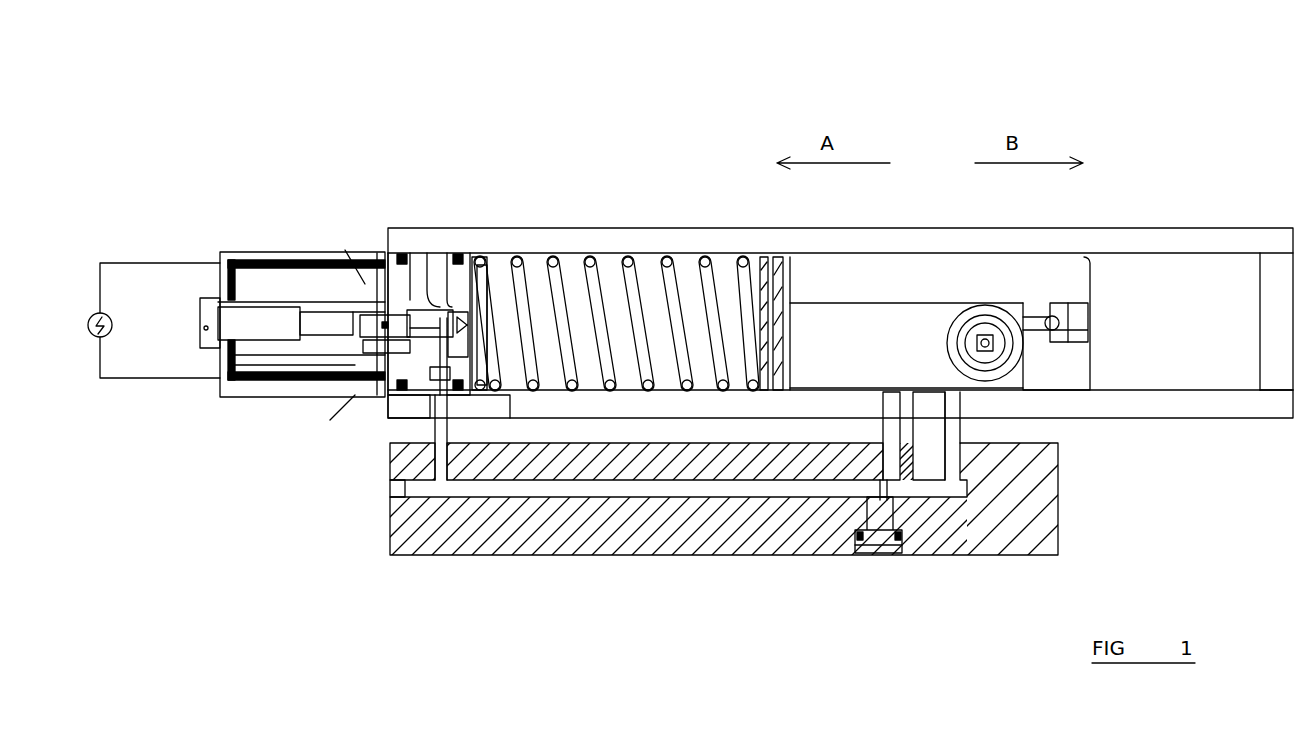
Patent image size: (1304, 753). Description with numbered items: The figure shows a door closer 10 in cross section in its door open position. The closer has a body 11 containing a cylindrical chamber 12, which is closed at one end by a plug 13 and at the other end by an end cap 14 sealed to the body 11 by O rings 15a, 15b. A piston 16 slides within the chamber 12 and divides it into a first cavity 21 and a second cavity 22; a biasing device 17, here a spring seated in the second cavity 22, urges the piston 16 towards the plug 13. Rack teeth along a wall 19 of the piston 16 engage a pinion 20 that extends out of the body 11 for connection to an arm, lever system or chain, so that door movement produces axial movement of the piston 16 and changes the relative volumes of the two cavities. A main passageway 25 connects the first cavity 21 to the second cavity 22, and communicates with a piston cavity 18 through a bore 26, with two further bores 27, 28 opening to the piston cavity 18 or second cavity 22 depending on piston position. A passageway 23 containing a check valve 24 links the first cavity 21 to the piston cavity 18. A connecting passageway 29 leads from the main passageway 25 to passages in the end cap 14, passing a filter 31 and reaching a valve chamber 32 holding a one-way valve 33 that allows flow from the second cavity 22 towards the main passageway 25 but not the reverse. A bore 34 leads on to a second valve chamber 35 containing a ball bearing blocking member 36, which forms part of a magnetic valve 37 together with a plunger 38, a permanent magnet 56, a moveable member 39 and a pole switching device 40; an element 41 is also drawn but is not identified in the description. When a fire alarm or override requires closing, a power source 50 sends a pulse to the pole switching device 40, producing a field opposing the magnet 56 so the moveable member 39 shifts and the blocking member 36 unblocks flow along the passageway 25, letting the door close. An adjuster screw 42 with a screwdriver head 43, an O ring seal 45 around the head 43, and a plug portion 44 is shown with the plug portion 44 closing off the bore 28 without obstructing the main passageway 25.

The door closer 10 is at (1090, 523).
The body 11 is at (1130, 240).
The cylindrical chamber 12 is at (1228, 274).
The plug 13 is at (1278, 370).
The end cap 14 is at (378, 250).
The O ring 15a is at (410, 250).
The O ring 15b is at (455, 250).
The piston 16 is at (780, 255).
The biasing device 17 is at (705, 253).
The piston cavity 18 is at (906, 331).
The wall 19 is at (850, 300).
The pinion 20 is at (985, 303).
The first cavity 21 is at (1159, 322).
The second cavity 22 is at (616, 323).
The passageway 23 is at (1030, 330).
The check valve 24 is at (1057, 347).
The passageway 25 is at (625, 505).
The bore 26 is at (957, 438).
The bore 27 is at (913, 438).
The bore 28 is at (880, 440).
The connecting passageway 29 is at (447, 438).
The filter 31 is at (400, 405).
The valve chamber 32 is at (385, 345).
The one-way valve 33 is at (515, 395).
The bore 34 is at (460, 250).
The second valve chamber 35 is at (330, 368).
The blocking member 36 is at (357, 293).
The magnetic valve 37 is at (254, 237).
The plunger 38 is at (318, 325).
The moveable member 39 is at (290, 250).
The pole switching device 40 is at (262, 243).
The valve member 41 is at (445, 250).
The adjuster screw 42 is at (866, 563).
The head 43 is at (880, 558).
The plug portion 44 is at (840, 505).
The O ring seal 45 is at (905, 535).
The power source 50 is at (83, 356).
The permanent magnet 56 is at (345, 250).